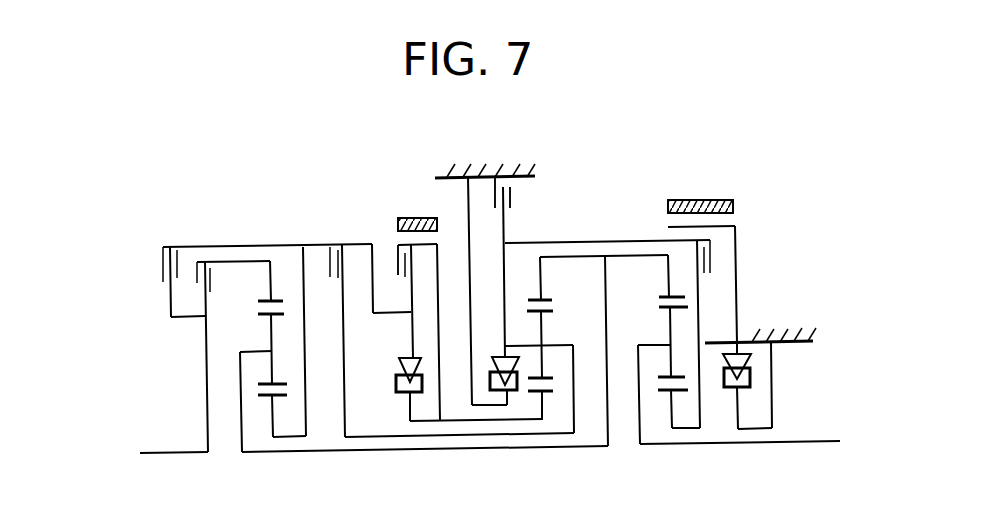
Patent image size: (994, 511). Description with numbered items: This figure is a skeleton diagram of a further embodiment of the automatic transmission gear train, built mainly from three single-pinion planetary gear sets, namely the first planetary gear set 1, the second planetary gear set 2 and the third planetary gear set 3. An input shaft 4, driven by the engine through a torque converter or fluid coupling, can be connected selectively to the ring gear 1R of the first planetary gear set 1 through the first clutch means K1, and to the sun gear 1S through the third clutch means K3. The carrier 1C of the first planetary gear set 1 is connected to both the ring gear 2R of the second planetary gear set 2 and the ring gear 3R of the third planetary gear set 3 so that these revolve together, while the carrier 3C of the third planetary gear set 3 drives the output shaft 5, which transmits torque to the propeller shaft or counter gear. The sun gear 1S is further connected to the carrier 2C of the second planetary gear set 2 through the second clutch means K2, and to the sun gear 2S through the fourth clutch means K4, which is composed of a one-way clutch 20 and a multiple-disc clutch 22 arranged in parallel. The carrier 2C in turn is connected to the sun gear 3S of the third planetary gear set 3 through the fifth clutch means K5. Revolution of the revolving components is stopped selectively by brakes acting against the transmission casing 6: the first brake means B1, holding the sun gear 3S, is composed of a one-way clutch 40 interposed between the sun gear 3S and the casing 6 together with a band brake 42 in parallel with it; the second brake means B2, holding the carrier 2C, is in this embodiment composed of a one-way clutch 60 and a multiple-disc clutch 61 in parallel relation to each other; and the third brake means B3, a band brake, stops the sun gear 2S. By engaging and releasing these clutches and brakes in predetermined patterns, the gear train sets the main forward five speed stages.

The first planetary gear set 1 is at (286, 446).
The ring gear of the first planetary gear set 1R is at (281, 322).
The carrier of the first planetary gear set 1C is at (256, 390).
The sun gear of the first planetary gear set 1S is at (283, 342).
The second planetary gear set 2 is at (534, 437).
The ring gear of the second planetary gear set 2R is at (597, 316).
The carrier of the second planetary gear set 2C is at (464, 377).
The sun gear of the second planetary gear set 2S is at (492, 402).
The third planetary gear set 3 is at (656, 430).
The ring gear of the third planetary gear set 3R is at (663, 281).
The carrier of the third planetary gear set 3C is at (654, 382).
The sun gear of the third planetary gear set 3S is at (680, 367).
The input shaft 4 is at (174, 450).
The output shaft 5 is at (823, 440).
The transmission casing 6 is at (522, 176).
The one-way clutch 20 is at (397, 378).
The multiple-disc clutch 22 is at (399, 262).
The one-way clutch 40 is at (744, 353).
The band brake 42 is at (735, 200).
The one-way clutch 60 is at (495, 390).
The multiple-disc clutch 61 is at (510, 203).
The first brake means B1 is at (743, 216).
The second brake means B2 is at (489, 315).
The third brake means B3 is at (417, 212).
The first clutch means K1 is at (233, 279).
The second clutch means K2 is at (341, 331).
The third clutch means K3 is at (182, 270).
The fourth clutch means K4 is at (424, 271).
The fifth clutch means K5 is at (702, 327).